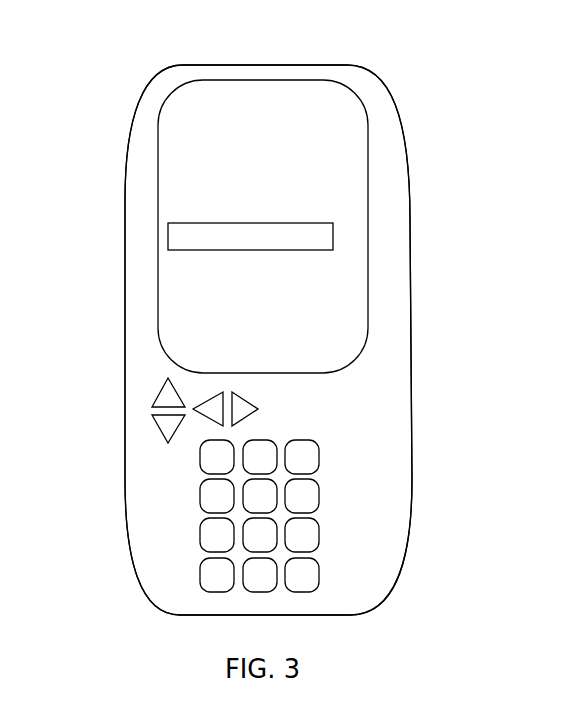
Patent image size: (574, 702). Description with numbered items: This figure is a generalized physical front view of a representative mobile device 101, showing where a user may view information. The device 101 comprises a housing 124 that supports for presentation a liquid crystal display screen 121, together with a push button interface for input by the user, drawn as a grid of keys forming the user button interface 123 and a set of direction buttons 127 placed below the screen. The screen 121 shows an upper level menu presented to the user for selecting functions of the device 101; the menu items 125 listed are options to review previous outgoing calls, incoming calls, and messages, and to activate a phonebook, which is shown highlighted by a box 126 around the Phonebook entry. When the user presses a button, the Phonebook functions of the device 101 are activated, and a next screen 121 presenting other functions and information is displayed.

The mobile device 101 is at (140, 82).
The liquid crystal display screen 121 is at (313, 108).
The user button interface 123 is at (178, 542).
The housing 124 is at (396, 133).
The menu list 125 is at (159, 166).
The highlighted menu item 126 is at (165, 256).
The direction buttons 127 is at (134, 452).